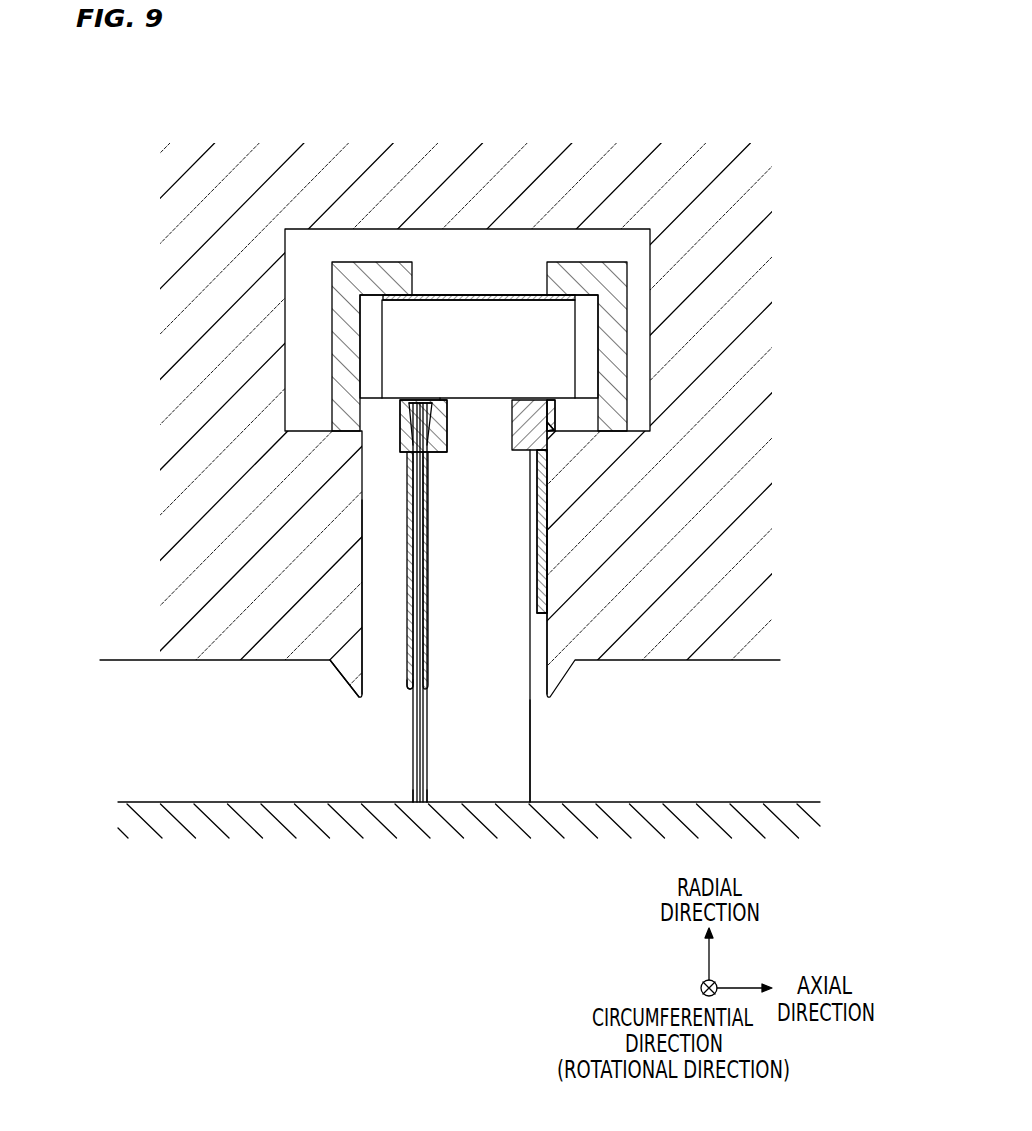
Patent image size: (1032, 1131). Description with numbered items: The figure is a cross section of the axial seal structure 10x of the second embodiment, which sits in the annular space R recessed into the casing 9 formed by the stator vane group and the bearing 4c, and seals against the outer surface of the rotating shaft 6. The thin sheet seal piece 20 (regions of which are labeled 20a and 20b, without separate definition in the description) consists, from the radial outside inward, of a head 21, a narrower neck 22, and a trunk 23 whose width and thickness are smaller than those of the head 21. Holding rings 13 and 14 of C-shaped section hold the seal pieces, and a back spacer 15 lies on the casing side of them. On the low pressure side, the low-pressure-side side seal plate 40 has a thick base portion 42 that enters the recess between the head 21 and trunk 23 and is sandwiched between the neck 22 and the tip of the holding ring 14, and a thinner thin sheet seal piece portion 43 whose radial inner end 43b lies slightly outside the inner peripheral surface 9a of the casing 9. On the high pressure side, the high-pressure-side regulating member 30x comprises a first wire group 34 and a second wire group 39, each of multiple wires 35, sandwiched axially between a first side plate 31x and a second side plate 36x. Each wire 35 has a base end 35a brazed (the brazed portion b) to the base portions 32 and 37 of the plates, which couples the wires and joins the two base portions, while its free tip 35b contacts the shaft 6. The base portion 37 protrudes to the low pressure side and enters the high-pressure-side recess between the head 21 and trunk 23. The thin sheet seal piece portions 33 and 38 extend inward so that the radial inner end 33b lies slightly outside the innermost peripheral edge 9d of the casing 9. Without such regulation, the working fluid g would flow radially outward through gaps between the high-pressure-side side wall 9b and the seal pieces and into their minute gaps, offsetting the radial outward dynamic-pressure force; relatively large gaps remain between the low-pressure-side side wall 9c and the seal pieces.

The casing 9 is at (677, 158).
The rotating shaft 6 is at (206, 850).
The bearing 4c is at (466, 401).
The inner peripheral surface of the casing 9a is at (648, 663).
The high-pressure-side side wall of the recess 9b is at (365, 633).
The low-pressure-side side wall of the recess 9c is at (547, 645).
The innermost peripheral edge of the casing 9d is at (357, 702).
The axial seal structure 10x is at (486, 249).
The holding ring 13 is at (347, 320).
The low-pressure-side holding ring 14 is at (620, 300).
The back spacer 15 is at (484, 293).
The thin sheet seal piece 20 is at (502, 595).
The plate upper portion 20a is at (512, 295).
The plate lower end 20b is at (518, 805).
The head 21 is at (560, 345).
The neck 22 is at (480, 420).
The trunk 23 is at (542, 531).
The high-pressure-side regulating member 30x is at (260, 621).
The first side plate 31x is at (402, 436).
The base portion 32 is at (400, 400).
The thin sheet seal piece portion 33 is at (388, 610).
The radial inner end 33b is at (412, 690).
The first wire group 34 is at (423, 527).
The wire 35 is at (420, 602).
The base end 35a is at (412, 418).
The tip 35b is at (418, 805).
The second side plate 36x is at (487, 522).
The base portion 37 is at (440, 432).
The thin sheet seal piece portion 38 is at (440, 523).
The second wire group 39 is at (435, 552).
The low-pressure-side side seal plate 40 is at (693, 440).
The base portion 42 is at (537, 440).
The thin sheet seal piece portion 43 is at (540, 473).
The radial inner end 43b is at (540, 615).
The brazed portion b is at (440, 402).
The annular space R is at (410, 588).
The working fluid g is at (240, 748).